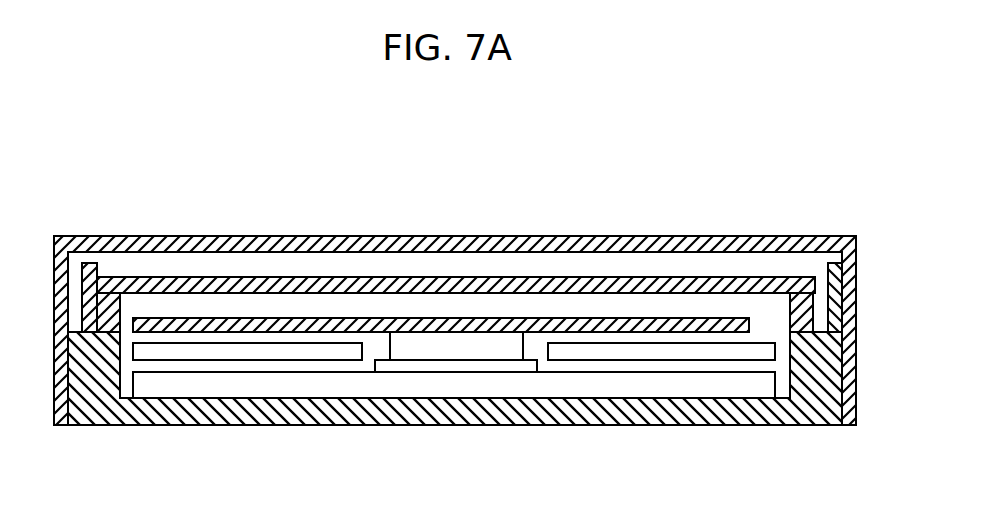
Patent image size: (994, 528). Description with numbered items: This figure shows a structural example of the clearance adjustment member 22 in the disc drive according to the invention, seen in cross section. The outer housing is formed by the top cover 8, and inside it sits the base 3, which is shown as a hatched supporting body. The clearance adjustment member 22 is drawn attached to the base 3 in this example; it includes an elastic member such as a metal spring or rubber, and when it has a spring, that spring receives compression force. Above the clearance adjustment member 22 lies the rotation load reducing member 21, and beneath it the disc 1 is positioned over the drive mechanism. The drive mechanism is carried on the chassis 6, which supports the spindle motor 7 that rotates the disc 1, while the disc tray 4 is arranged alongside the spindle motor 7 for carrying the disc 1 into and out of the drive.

The disc 1 is at (305, 318).
The base 3 is at (810, 390).
The disc tray 4 is at (267, 353).
The chassis 6 is at (157, 382).
The spindle motor 7 is at (447, 350).
The top cover 8 is at (634, 238).
The rotation load reducing member 21 is at (193, 278).
The clearance adjustment member 22 is at (806, 312).